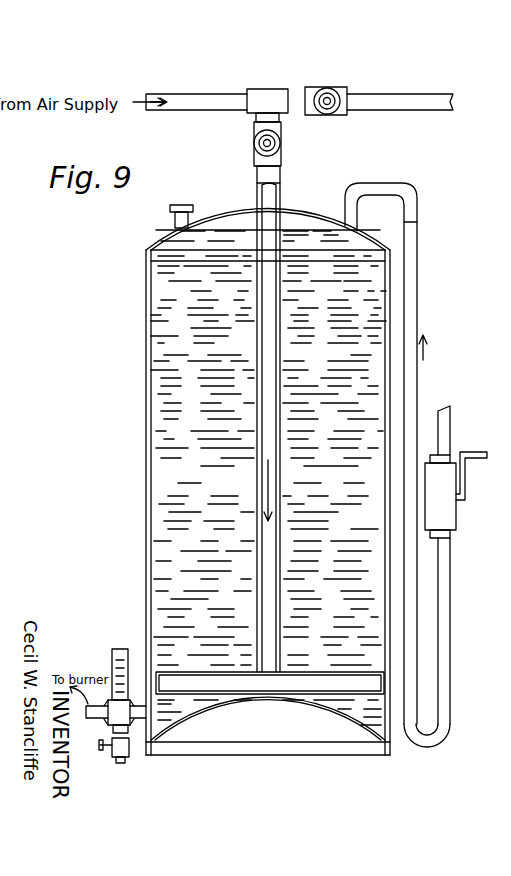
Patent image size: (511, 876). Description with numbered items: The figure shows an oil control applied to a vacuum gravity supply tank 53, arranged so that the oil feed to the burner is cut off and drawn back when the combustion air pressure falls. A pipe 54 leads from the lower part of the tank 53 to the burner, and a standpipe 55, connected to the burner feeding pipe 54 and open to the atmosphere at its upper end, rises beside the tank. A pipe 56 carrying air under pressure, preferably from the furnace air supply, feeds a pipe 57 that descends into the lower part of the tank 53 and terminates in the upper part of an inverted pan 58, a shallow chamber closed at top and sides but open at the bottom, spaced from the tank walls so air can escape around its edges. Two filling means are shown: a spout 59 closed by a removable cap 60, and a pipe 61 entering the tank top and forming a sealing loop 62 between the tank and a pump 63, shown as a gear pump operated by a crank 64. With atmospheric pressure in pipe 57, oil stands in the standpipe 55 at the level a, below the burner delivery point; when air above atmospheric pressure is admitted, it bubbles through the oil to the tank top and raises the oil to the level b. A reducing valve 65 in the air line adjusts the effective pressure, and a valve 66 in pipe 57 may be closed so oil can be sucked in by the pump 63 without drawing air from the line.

The tank 53 is at (167, 471).
The pipe 54 is at (98, 720).
The standpipe 55 is at (114, 683).
The level a is at (122, 703).
The level b is at (118, 650).
The pipe 56 is at (210, 103).
The pipe 57 is at (260, 246).
The inverted pan 58 is at (215, 681).
The spout 59 is at (173, 226).
The cap 60 is at (183, 207).
The pipe 61 is at (408, 321).
The sealing loop 62 is at (427, 748).
The pump 63 is at (452, 519).
The crank 64 is at (481, 452).
The reducing valve 65 is at (325, 116).
The valve 66 is at (272, 145).